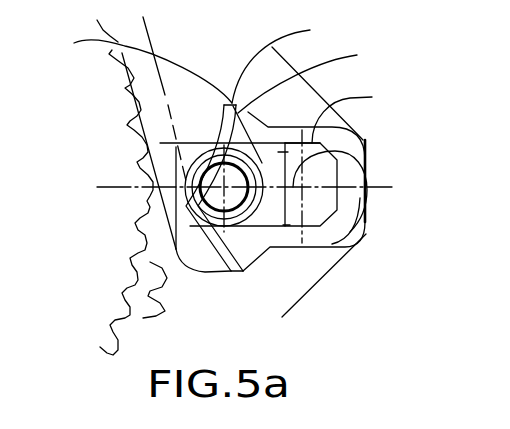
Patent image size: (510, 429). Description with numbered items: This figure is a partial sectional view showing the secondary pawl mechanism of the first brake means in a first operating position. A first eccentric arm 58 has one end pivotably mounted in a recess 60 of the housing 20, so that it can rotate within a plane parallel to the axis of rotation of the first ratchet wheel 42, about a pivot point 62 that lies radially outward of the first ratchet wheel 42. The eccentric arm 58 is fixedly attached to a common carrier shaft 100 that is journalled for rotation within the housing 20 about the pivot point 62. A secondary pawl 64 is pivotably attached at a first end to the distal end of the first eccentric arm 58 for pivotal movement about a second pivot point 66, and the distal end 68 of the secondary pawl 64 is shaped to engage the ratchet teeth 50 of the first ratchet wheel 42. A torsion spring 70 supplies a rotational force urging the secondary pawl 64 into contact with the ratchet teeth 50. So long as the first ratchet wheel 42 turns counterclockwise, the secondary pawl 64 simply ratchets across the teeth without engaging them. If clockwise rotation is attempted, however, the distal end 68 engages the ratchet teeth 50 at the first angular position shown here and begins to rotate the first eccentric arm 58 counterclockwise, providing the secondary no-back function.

The housing 20 is at (238, 322).
The first ratchet wheel 42 is at (95, 173).
The ratchet teeth 50 is at (130, 252).
The first eccentric arm 58 is at (305, 228).
The recess 60 is at (348, 228).
The pivot point 62 is at (335, 151).
The secondary pawl 64 is at (214, 120).
The second pivot point 66 is at (316, 88).
The distal end 68 is at (135, 69).
The torsion spring 70 is at (288, 55).
The common carrier shaft 100 is at (367, 110).